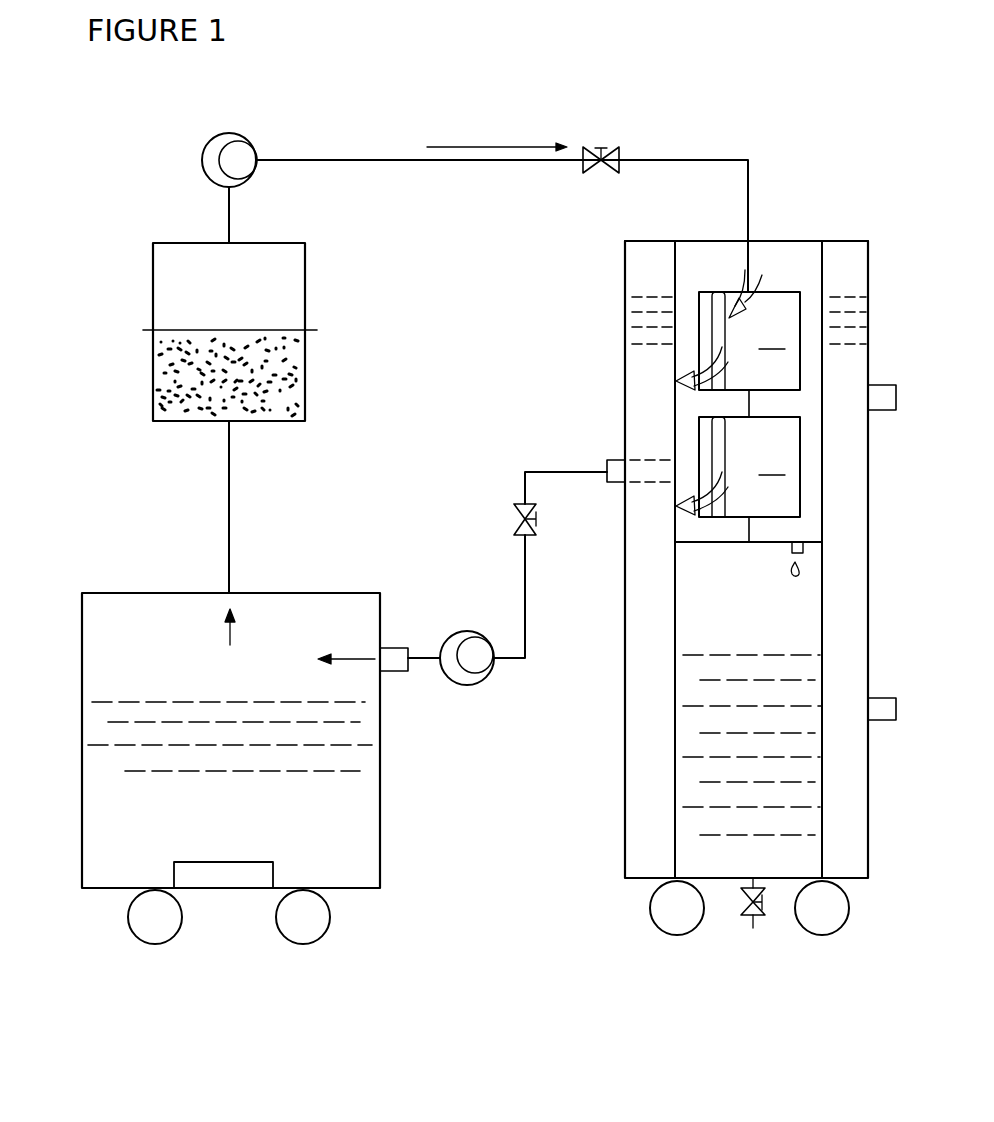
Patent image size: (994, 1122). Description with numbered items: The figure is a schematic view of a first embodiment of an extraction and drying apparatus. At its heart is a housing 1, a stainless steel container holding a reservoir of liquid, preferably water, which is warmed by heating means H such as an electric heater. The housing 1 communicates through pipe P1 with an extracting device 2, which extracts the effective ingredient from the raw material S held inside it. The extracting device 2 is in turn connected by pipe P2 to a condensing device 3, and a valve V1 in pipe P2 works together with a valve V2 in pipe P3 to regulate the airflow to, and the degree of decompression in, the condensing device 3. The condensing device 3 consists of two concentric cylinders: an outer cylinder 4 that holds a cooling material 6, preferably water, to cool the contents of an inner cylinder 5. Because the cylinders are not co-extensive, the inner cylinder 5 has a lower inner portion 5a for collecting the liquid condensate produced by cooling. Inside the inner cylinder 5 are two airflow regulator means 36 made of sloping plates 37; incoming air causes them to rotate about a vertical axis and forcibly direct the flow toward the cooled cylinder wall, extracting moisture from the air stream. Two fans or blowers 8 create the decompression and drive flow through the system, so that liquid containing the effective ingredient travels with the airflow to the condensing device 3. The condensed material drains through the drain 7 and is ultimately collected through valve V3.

The housing 1 is at (81, 779).
The extracting device 2 is at (306, 282).
The condensing device 3 is at (894, 325).
The outer cylinder 4 is at (858, 564).
The inner cylinder 5 is at (798, 250).
The lower inner portion 5a is at (808, 683).
The cooling material 6 is at (868, 291).
The drain 7 is at (792, 556).
The fan or blower 8 is at (247, 143).
The airflow regulator means 36 is at (749, 417).
The sloping plates 37 is at (704, 290).
The means for heating H is at (255, 858).
The raw material S is at (292, 380).
The pipe P1 is at (231, 508).
The pipe P2 is at (425, 164).
The pipe P3 is at (527, 583).
The valve V1 is at (621, 151).
The valve V2 is at (539, 505).
The valve V3 is at (743, 914).